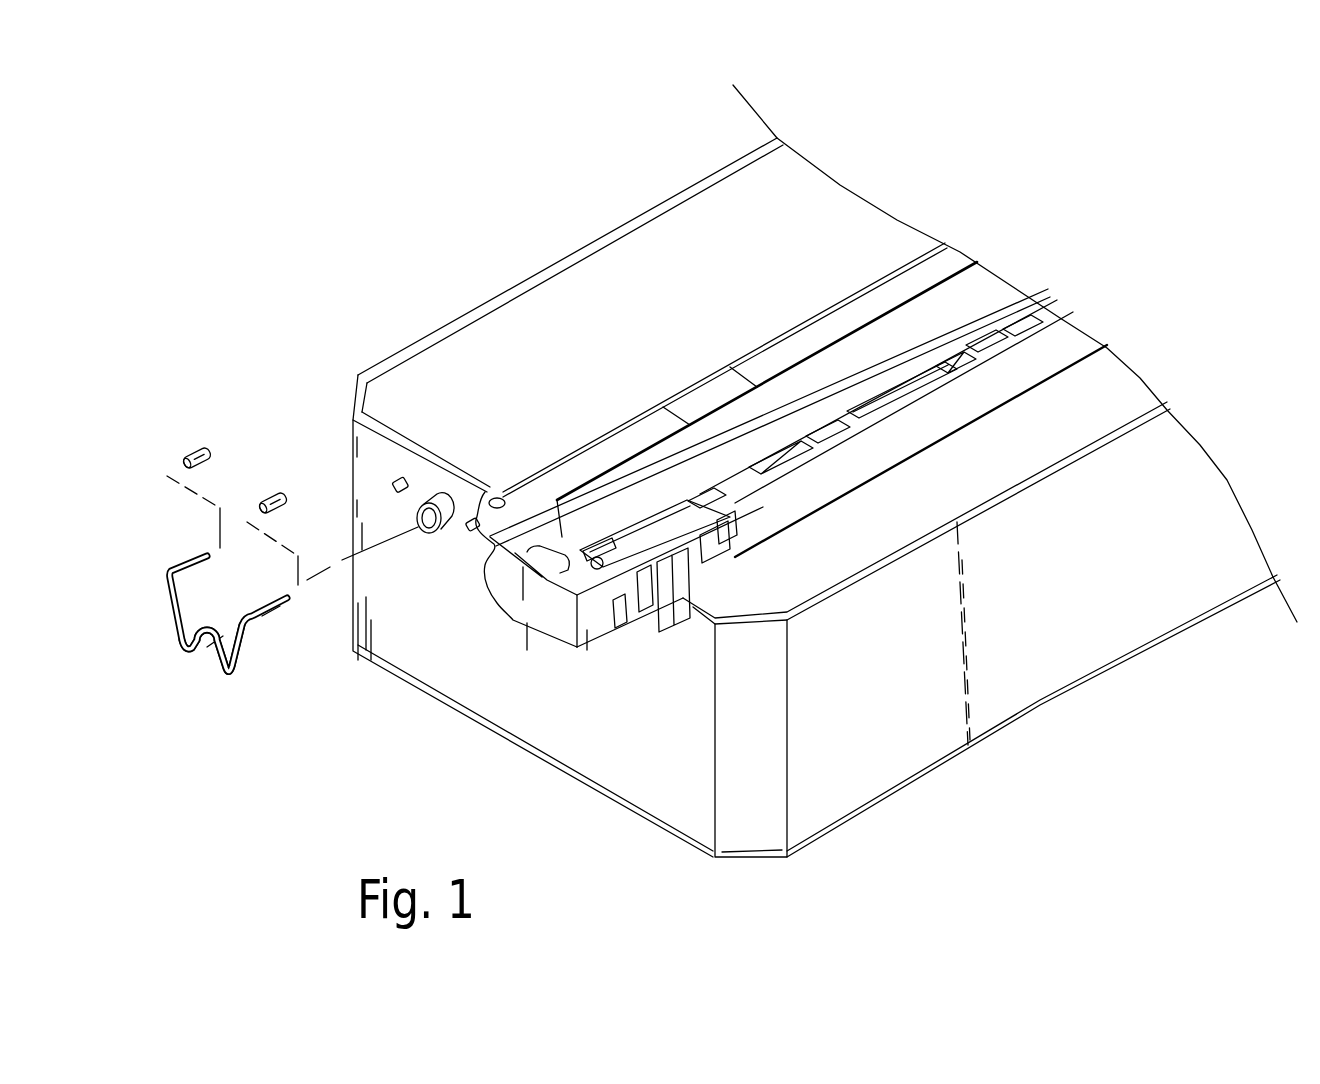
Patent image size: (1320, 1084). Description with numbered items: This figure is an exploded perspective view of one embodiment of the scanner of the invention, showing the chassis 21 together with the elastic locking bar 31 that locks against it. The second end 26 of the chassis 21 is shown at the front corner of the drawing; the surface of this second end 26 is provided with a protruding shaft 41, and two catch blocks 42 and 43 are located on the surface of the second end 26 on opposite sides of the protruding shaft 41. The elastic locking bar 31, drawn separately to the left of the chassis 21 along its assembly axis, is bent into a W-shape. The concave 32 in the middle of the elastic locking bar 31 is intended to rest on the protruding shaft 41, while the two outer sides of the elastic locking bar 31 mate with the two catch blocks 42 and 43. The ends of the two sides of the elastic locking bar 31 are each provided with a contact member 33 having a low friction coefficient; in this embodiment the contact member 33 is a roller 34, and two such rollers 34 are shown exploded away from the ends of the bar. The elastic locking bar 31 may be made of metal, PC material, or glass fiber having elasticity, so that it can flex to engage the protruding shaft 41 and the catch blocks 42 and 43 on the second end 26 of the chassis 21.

The chassis 21 is at (893, 753).
The second end of the chassis 26 is at (573, 722).
The elastic locking bar 31 is at (217, 694).
The concave 32 is at (207, 652).
The contact member 33 is at (223, 418).
The roller 34 is at (195, 452).
The protruding shaft 41 is at (447, 524).
The catch block 42 is at (392, 478).
The catch block 43 is at (468, 520).